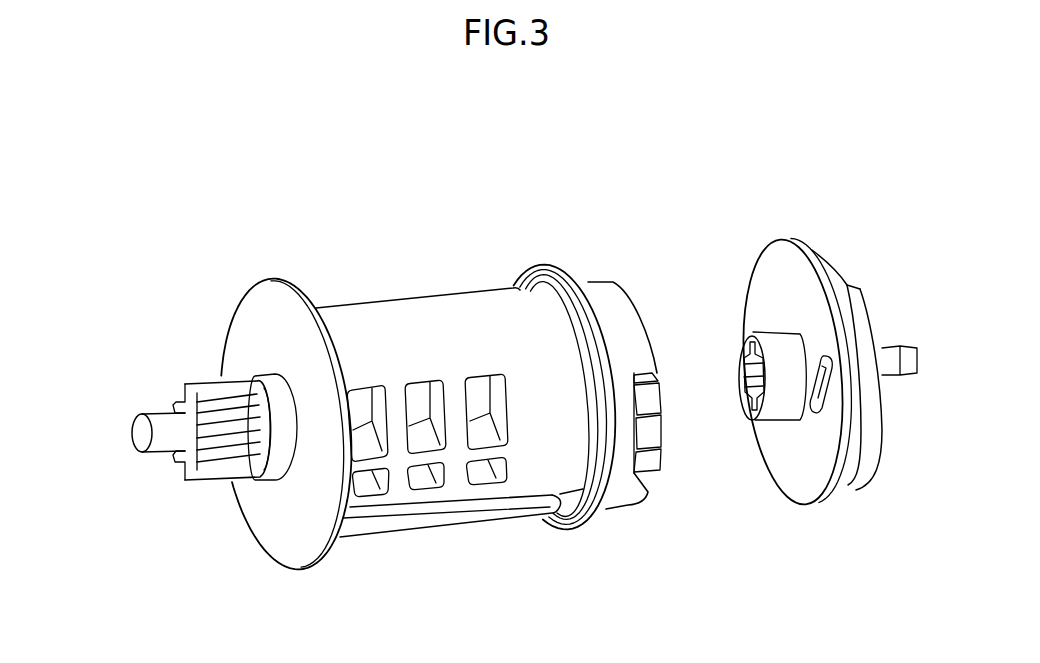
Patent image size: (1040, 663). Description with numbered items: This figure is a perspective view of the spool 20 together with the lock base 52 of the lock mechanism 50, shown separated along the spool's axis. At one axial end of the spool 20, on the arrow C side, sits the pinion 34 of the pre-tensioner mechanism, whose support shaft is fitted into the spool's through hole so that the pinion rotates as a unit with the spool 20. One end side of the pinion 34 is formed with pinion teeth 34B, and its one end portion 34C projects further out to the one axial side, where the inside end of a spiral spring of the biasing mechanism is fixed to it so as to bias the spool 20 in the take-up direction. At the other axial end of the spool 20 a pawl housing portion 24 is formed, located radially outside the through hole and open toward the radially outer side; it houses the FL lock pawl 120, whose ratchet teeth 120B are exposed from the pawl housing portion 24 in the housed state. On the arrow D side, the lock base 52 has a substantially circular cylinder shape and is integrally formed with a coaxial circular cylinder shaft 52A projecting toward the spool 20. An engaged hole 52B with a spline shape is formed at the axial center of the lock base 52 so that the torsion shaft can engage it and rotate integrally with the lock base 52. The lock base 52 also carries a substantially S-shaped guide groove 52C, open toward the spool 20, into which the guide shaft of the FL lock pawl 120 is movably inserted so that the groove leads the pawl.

The spool 20 is at (380, 302).
The pawl housing portion 24 is at (640, 372).
The pinion 34 is at (196, 378).
The pinion teeth 34B is at (226, 480).
The one end portion 34C is at (166, 455).
The lock mechanism 50 is at (818, 360).
The lock base 52 is at (828, 508).
The circular cylinder shaft 52A is at (786, 357).
The engaged hole 52B is at (742, 368).
The guide groove 52C is at (832, 394).
The FL lock pawl 120 is at (645, 455).
The ratchet teeth 120B is at (660, 385).